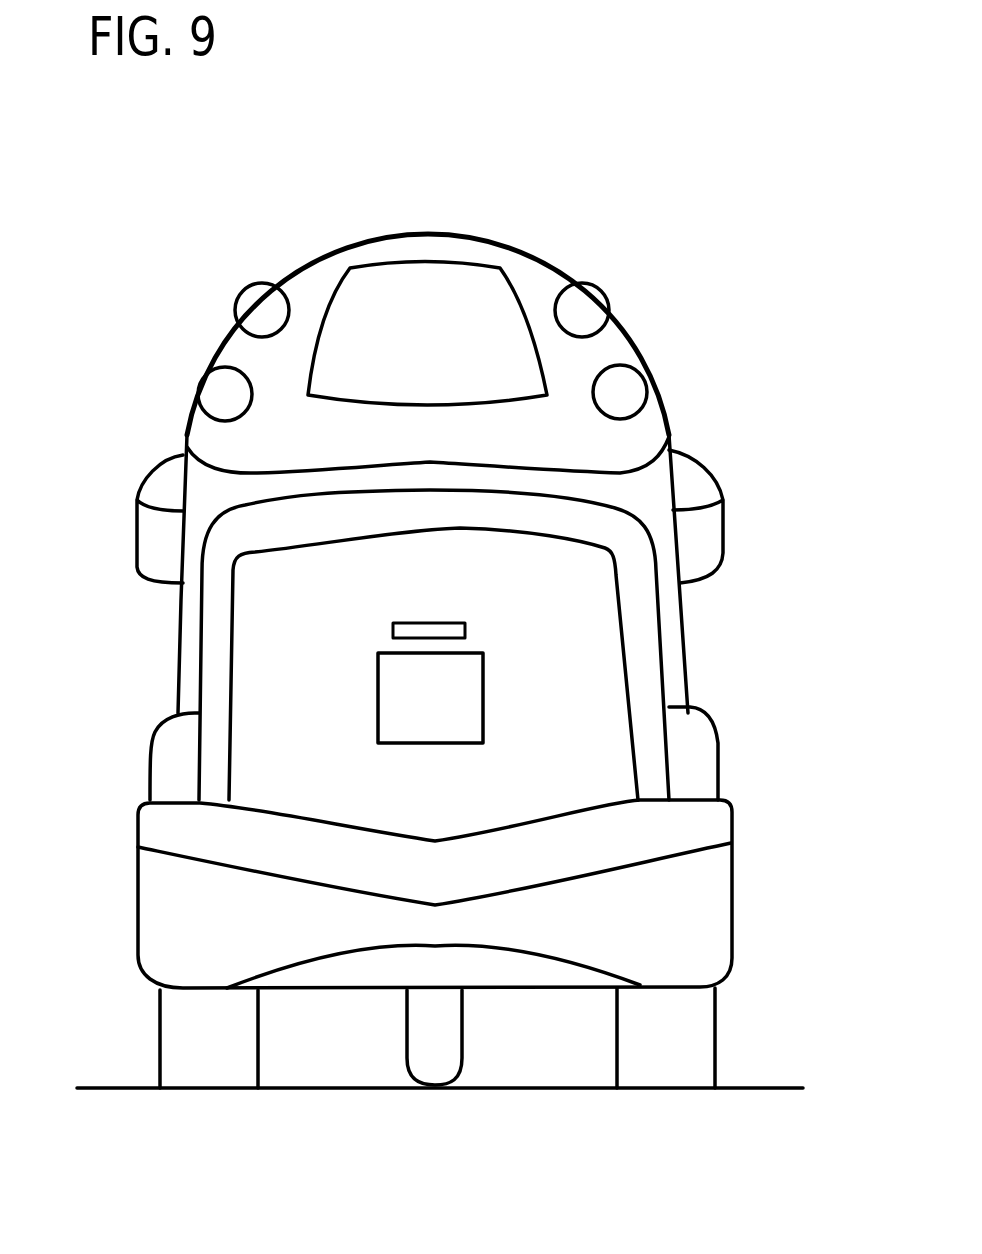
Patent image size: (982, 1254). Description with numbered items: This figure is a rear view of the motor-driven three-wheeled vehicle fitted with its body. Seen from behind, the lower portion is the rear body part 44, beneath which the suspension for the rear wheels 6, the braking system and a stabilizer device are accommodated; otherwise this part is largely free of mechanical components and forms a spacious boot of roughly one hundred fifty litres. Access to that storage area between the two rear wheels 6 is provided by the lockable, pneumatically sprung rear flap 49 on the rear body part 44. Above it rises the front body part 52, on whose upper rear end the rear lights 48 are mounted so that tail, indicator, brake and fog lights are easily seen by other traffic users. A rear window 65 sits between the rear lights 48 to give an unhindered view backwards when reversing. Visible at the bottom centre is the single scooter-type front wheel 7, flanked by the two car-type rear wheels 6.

The rear wheels 6 is at (198, 1023).
The front wheel 7 is at (440, 1037).
The rear body part 44 is at (217, 670).
The rear lights 48 is at (255, 312).
The rear flap 49 is at (592, 665).
The front body part 52 is at (210, 497).
The rear window 65 is at (495, 292).